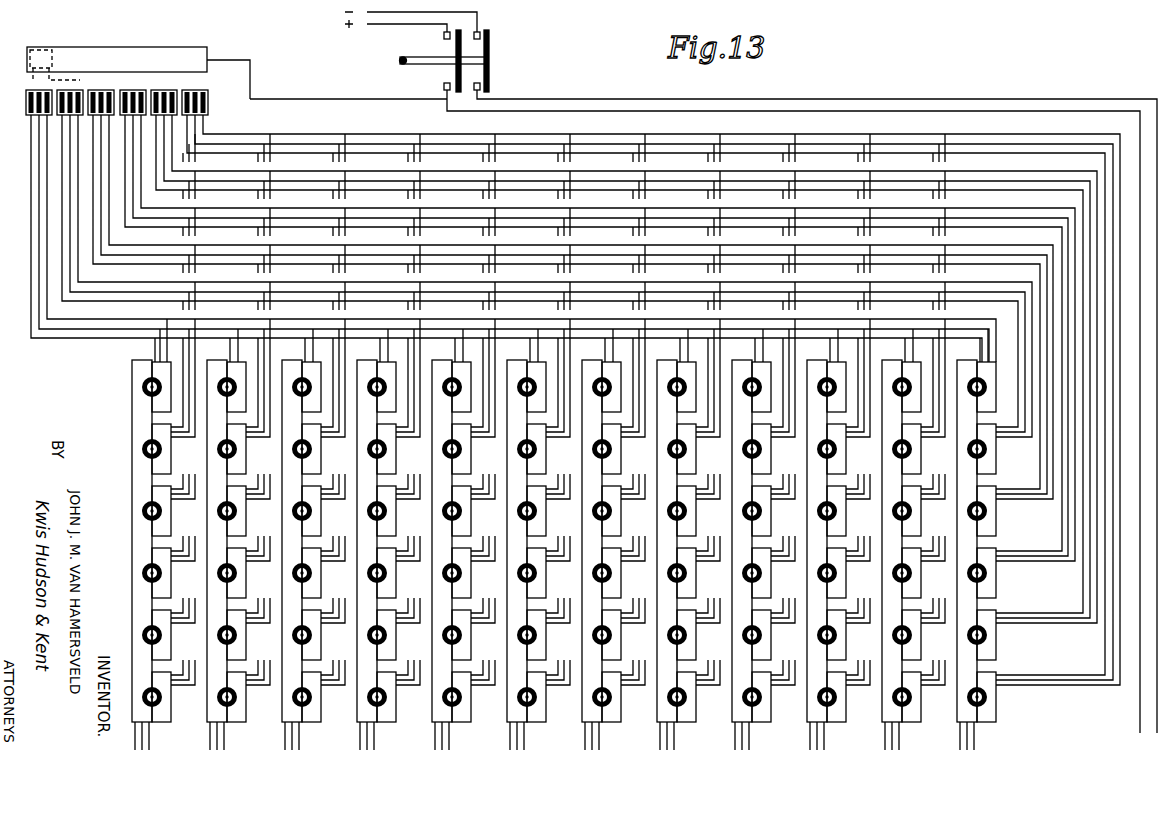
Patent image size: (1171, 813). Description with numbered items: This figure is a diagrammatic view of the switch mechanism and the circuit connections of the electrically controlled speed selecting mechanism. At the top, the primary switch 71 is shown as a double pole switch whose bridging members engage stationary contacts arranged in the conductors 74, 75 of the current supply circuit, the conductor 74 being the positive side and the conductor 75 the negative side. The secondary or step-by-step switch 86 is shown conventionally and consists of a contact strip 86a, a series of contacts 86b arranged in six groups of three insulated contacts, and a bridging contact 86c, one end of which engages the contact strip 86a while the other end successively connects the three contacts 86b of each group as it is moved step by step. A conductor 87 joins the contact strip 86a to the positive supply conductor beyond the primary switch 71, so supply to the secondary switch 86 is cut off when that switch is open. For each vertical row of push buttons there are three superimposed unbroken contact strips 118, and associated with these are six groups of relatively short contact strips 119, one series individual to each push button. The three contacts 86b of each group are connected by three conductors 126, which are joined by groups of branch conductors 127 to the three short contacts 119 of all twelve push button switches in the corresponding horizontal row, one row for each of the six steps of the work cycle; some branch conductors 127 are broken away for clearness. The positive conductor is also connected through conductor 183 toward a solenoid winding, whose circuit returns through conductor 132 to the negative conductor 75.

The secondary switch 86 is at (117, 45).
The contact strip 86a is at (175, 47).
The contacts 86b is at (208, 103).
The bridging contact 86c is at (68, 69).
The conductor 87 is at (300, 99).
The conductor 74 is at (378, 25).
The conductor 75 is at (405, 13).
The primary switch 71 is at (457, 60).
The conductor 132 is at (805, 99).
The conductor 183 is at (875, 112).
The conductors 126 is at (1008, 134).
The branch conductors 127 is at (572, 236).
The contact strips 118 is at (133, 480).
The contact strips 119 is at (150, 400).